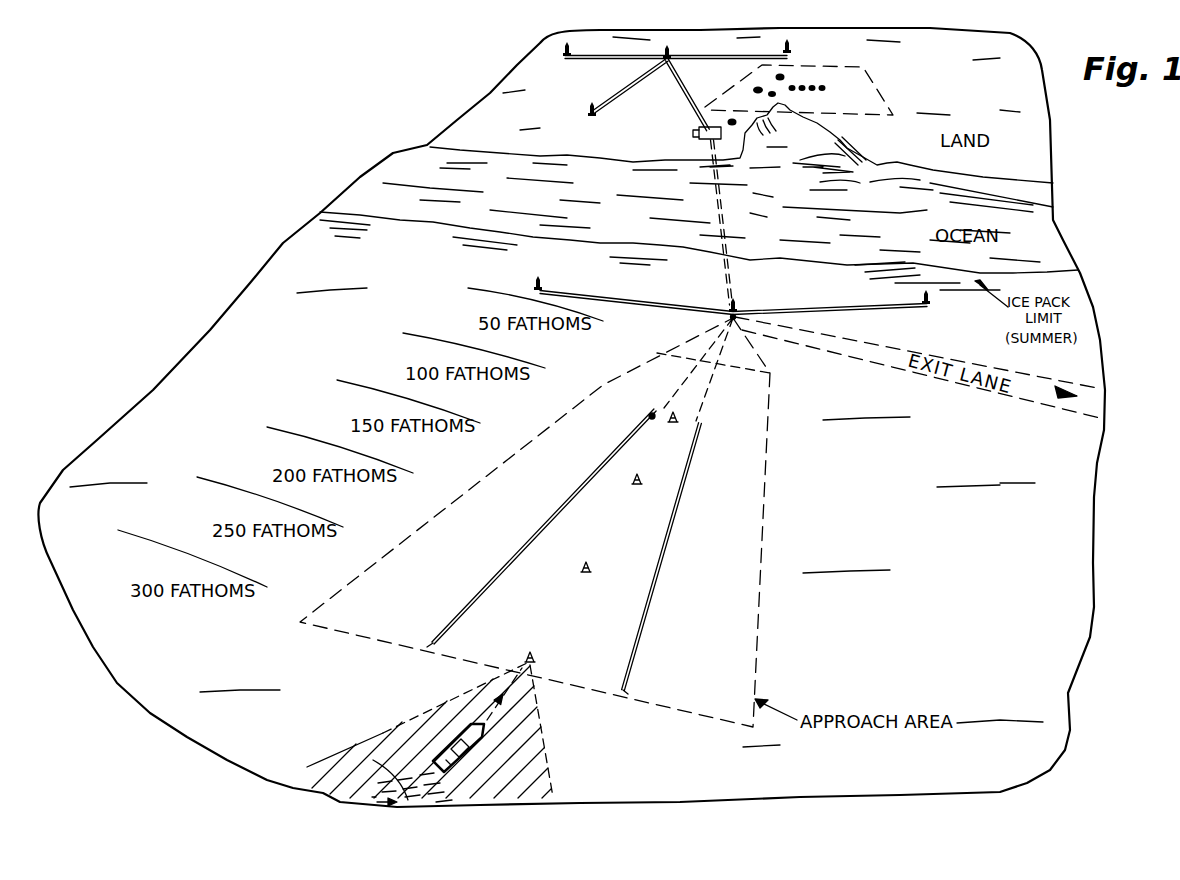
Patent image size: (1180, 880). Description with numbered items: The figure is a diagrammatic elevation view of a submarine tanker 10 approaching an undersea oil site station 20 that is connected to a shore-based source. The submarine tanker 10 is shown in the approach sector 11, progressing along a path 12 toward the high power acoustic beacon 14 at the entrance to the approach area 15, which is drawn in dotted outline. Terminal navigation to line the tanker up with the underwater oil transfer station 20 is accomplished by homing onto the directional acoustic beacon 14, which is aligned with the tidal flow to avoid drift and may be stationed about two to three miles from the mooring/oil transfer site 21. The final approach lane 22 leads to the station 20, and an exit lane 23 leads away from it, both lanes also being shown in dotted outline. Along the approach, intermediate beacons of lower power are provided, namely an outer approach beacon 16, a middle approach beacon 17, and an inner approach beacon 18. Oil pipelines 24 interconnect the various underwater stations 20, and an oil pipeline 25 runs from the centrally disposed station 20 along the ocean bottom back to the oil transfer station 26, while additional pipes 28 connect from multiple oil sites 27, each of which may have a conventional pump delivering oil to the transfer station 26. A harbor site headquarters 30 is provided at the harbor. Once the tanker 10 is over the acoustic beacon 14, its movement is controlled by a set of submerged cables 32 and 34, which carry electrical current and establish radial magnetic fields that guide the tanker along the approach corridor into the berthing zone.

The submarine tanker 10 is at (478, 752).
The approach sector 11 is at (433, 717).
The path 12 is at (373, 760).
The high power acoustic beacon 14 is at (526, 659).
The approach area 15 is at (423, 607).
The outer approach beacon 16 is at (582, 568).
The middle approach beacon 17 is at (633, 480).
The inner approach beacon 18 is at (648, 416).
The undersea oil site station 20 is at (535, 282).
The mooring/oil transfer site 21 is at (707, 320).
The final approach lane 22 is at (690, 375).
The exit lane 23 is at (1060, 403).
The oil pipelines 24 is at (633, 296).
The oil pipeline 25 is at (745, 286).
The oil transfer station 26 is at (697, 133).
The oil sites 27 is at (563, 50).
The pipes 28 is at (590, 63).
The harbor site headquarters 30 is at (830, 87).
The submerged cable 32 is at (480, 593).
The submerged cable 34 is at (648, 610).